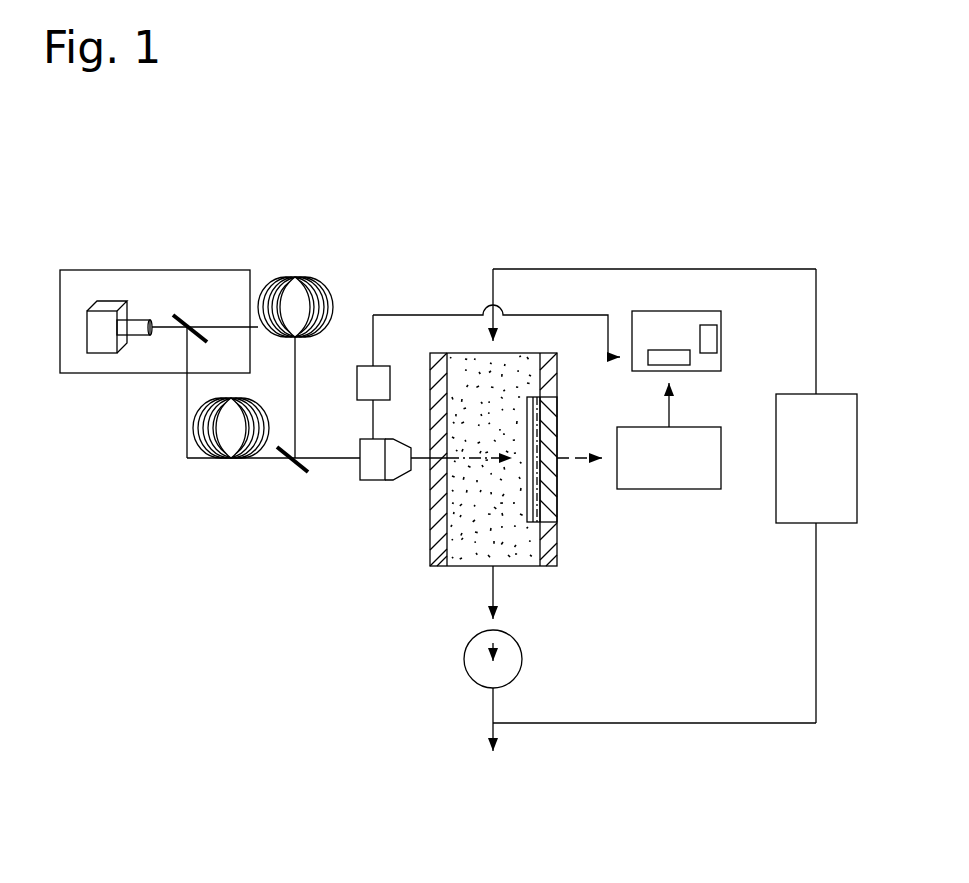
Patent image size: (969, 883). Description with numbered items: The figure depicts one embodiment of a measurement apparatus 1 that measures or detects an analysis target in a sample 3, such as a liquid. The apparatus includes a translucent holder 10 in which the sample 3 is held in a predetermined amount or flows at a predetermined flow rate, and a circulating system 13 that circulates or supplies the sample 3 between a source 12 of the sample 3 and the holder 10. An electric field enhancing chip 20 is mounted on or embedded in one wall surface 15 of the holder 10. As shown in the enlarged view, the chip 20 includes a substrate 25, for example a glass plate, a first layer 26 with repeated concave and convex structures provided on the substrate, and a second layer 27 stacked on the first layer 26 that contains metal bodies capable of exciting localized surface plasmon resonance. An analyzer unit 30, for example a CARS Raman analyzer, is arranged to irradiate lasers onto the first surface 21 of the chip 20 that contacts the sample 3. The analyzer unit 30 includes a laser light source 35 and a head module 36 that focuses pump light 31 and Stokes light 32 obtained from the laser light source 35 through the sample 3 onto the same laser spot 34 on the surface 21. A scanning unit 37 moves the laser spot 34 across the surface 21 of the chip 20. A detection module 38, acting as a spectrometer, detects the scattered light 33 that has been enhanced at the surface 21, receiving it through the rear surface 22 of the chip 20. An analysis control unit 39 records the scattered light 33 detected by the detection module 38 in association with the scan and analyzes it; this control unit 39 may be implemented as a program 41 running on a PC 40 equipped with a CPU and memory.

The measurement apparatus 1 is at (275, 623).
The sample 3 is at (463, 552).
The translucent holder 10 is at (420, 538).
The source 12 is at (787, 515).
The circulating system 13 is at (559, 703).
The wall surface 15 is at (542, 563).
The electric field enhancing chip 20 is at (558, 414).
The first surface 21 is at (519, 414).
The rear surface 22 is at (561, 502).
The substrate 25 is at (559, 412).
The first layer 26 is at (533, 397).
The second layer 27 is at (521, 386).
The analyzer unit 30 is at (368, 290).
The pump light 31 is at (297, 430).
The Stokes light 32 is at (262, 462).
The scattered light 33 is at (582, 460).
The laser spot 34 is at (514, 453).
The laser light source 35 is at (220, 290).
The head module 36 is at (373, 472).
The scanning unit 37 is at (365, 385).
The detection module 38 is at (645, 483).
The analysis control unit 39 is at (678, 358).
The PC 40 is at (728, 319).
The program 41 is at (710, 339).